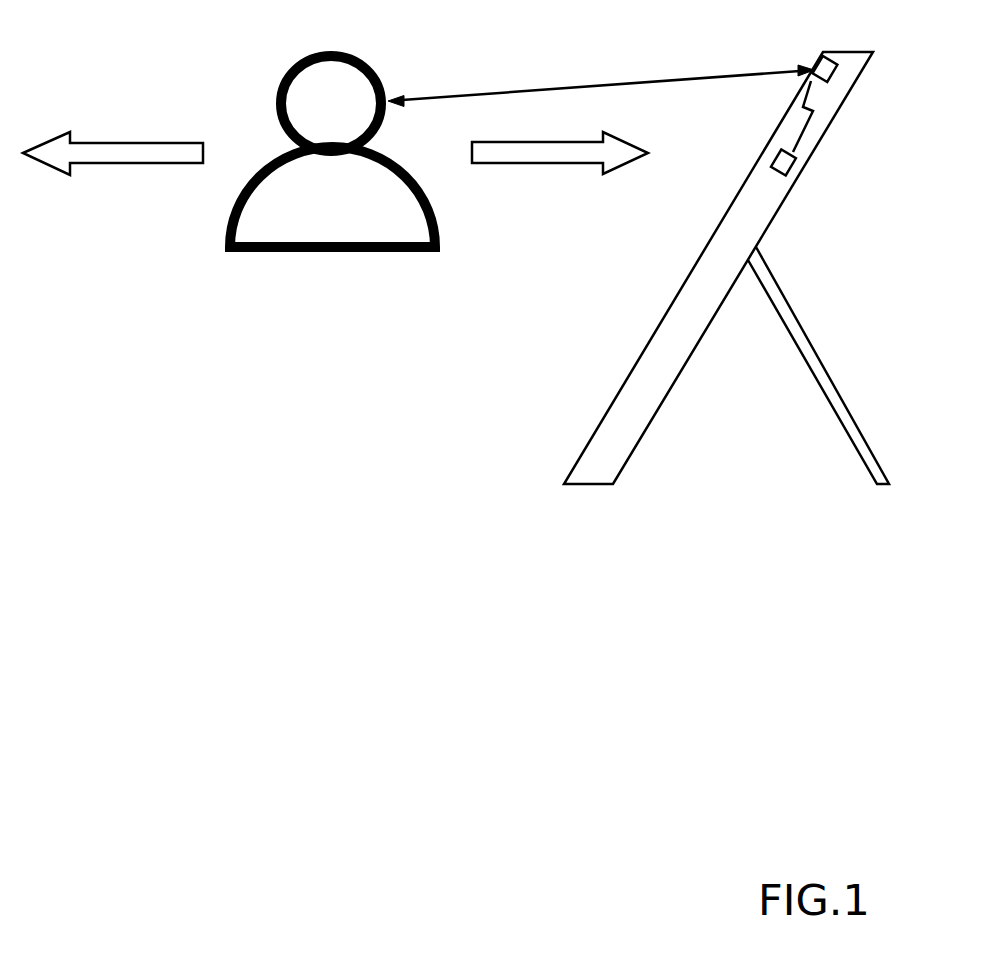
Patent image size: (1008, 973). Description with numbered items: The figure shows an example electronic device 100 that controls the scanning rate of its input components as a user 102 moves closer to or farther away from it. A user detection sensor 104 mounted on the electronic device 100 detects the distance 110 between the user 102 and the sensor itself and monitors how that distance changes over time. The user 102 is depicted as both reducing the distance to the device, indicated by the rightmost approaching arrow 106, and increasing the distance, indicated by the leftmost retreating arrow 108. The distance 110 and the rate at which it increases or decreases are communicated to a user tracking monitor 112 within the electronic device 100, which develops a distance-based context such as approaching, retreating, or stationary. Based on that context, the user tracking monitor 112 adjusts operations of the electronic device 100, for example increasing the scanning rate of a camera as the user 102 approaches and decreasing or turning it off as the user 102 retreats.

The electronic device 100 is at (598, 484).
The user 102 is at (352, 252).
The user detection sensor 104 is at (818, 70).
The approaching arrow 106 is at (533, 163).
The retreating arrow 108 is at (152, 163).
The distance 110 is at (613, 83).
The user tracking monitor 112 is at (786, 172).